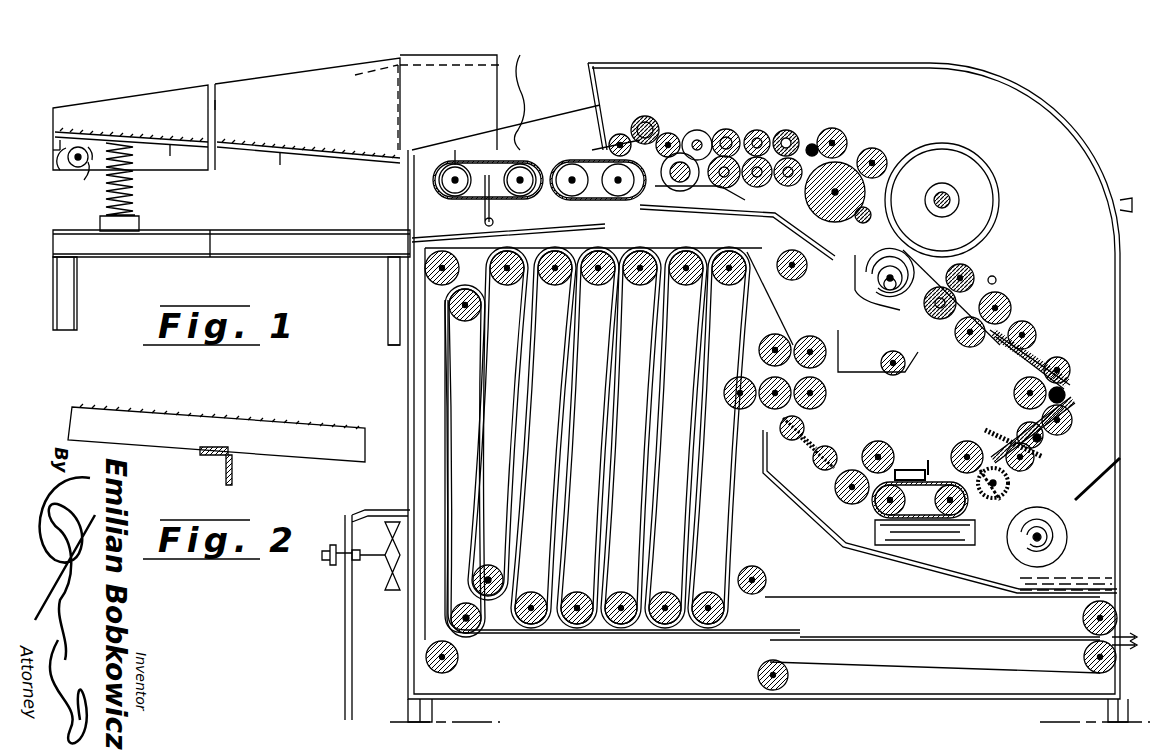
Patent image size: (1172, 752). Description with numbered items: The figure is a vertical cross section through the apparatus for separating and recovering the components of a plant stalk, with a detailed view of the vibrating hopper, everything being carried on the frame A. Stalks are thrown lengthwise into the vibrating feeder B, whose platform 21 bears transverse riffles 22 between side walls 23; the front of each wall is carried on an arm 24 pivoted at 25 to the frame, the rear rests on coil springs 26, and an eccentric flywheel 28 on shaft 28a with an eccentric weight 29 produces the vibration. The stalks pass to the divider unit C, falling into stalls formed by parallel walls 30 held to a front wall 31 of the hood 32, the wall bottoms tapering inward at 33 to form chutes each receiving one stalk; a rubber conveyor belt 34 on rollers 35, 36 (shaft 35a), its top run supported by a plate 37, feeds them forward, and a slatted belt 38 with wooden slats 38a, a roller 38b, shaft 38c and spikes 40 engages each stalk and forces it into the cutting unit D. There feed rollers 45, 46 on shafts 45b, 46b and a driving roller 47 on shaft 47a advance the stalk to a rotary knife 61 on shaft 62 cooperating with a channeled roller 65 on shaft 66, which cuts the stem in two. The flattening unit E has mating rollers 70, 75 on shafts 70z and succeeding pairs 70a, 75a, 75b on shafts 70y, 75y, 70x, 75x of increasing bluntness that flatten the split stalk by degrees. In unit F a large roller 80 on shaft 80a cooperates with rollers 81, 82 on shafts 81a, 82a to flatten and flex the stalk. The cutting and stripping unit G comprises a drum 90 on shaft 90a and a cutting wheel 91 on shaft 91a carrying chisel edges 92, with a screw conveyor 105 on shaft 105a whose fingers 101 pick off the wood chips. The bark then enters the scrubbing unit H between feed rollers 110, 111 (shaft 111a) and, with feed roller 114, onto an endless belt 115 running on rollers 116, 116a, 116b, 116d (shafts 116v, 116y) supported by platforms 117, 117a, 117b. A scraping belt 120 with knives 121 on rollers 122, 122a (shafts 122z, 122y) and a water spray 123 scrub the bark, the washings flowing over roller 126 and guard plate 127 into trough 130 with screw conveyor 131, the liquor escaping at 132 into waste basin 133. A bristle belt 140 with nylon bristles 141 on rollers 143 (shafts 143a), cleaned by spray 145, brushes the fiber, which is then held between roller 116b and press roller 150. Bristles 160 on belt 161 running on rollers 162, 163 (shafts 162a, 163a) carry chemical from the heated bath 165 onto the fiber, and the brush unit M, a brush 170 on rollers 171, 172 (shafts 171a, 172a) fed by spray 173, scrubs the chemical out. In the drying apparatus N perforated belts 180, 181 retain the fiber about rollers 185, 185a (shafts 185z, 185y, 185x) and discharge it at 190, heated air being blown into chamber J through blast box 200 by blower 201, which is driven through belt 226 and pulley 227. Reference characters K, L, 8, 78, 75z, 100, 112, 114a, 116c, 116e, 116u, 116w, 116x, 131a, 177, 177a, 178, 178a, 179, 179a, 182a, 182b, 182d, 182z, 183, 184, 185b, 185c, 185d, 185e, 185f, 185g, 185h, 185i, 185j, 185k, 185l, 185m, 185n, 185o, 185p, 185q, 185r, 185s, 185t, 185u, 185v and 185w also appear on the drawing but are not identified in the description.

In FIG. 1, the feed table frame A is at (386, 338).
In FIG. 1, the feed conveyor B is at (292, 75).
In FIG. 1, the hopper C is at (518, 91).
In FIG. 1, the feeding mechanism D is at (660, 100).
In FIG. 1, the mixing unit E is at (778, 56).
In FIG. 1, the crushing unit F is at (850, 110).
In FIG. 1, the drum G is at (965, 180).
In FIG. 1, the roller unit H is at (1092, 303).
In FIG. 1, the pressing unit J is at (1105, 440).
In FIG. 1, the winding wheel K is at (1090, 525).
In FIG. 1, the trough unit L is at (852, 592).
In FIG. 1, the chamber M is at (940, 511).
In FIG. 1, the conveyor unit N is at (672, 600).
In FIG. 1, the conveyor plank 21 is at (260, 160).
In FIG. 2, the conveyor plank 21 is at (290, 462).
In FIG. 1, the teeth 22 is at (205, 140).
In FIG. 2, the teeth 22 is at (245, 412).
In FIG. 1, the hopper wall 23 is at (352, 80).
In FIG. 1, the arm 24 is at (483, 213).
In FIG. 1, the bottom plate 25 is at (412, 236).
In FIG. 1, the spring 26 is at (134, 186).
In FIG. 1, the pulley 28 is at (76, 167).
In FIG. 1, the pulley arm 28a is at (86, 182).
In FIG. 1, the pivot 29 is at (68, 153).
In FIG. 1, the chute 30 is at (532, 140).
In FIG. 1, the housing wall 31 is at (585, 78).
In FIG. 1, the housing top 32 is at (613, 47).
In FIG. 1, the roller support 33 is at (455, 163).
In FIG. 1, the belt 34 is at (498, 153).
In FIG. 1, the roller 35 is at (440, 180).
In FIG. 1, the roller guide 35a is at (440, 170).
In FIG. 1, the roller shaft 36 is at (528, 196).
In FIG. 1, the roller 37 is at (520, 175).
In FIG. 1, the belt conveyor 38 is at (572, 196).
In FIG. 1, the belt guide 38a is at (565, 162).
In FIG. 1, the inclined belt 38b is at (672, 220).
In FIG. 1, the belt roller 38c is at (597, 235).
In FIG. 1, the belt guide 40 is at (570, 153).
In FIG. 1, the gear 45 is at (618, 133).
In FIG. 1, the gear 45b is at (630, 117).
In FIG. 1, the gear 46 is at (672, 133).
In FIG. 1, the gear 46b is at (677, 95).
In FIG. 1, the gear 47 is at (643, 116).
In FIG. 1, the gear 47a is at (650, 116).
In FIG. 1, the shaft 61 is at (722, 95).
In FIG. 1, the shaft 62 is at (720, 79).
In FIG. 1, the guide plate 65 is at (698, 223).
In FIG. 1, the guide plate 66 is at (700, 202).
In FIG. 1, the roller 70 is at (730, 128).
In FIG. 1, the roller 70a is at (792, 99).
In FIG. 1, the roller 70x is at (821, 132).
In FIG. 1, the roller 70y is at (784, 134).
In FIG. 1, the roller 70z is at (752, 132).
In FIG. 1, the roller 75 is at (705, 172).
In FIG. 1, the roller 75a is at (737, 180).
In FIG. 1, the roller 75b is at (768, 181).
In FIG. 1, the roller 75x is at (787, 199).
In FIG. 1, the roller 75y is at (750, 223).
In FIG. 1, the roller 75z is at (729, 219).
In FIG. 1, the roller 78 is at (672, 192).
In FIG. 1, the roller 8 is at (697, 130).
In FIG. 1, the crushing roller 80 is at (828, 200).
In FIG. 1, the roller shaft 80a is at (832, 227).
In FIG. 1, the roller 81 is at (843, 137).
In FIG. 1, the roller shaft 81a is at (880, 102).
In FIG. 1, the roller 82 is at (882, 150).
In FIG. 1, the roller shaft 82a is at (918, 109).
In FIG. 1, the drum 90 is at (1004, 198).
In FIG. 1, the drum shaft 90a is at (958, 196).
In FIG. 1, the guide 91 is at (830, 243).
In FIG. 1, the guide 91a is at (878, 210).
In FIG. 1, the roller 92 is at (859, 226).
In FIG. 1, the spiral roller 100 is at (905, 300).
In FIG. 1, the frame 101 is at (890, 343).
In FIG. 1, the roller 105 is at (835, 310).
In FIG. 1, the roller 105a is at (785, 328).
In FIG. 1, the roller 110 is at (968, 324).
In FIG. 1, the gear 111 is at (975, 270).
In FIG. 1, the gear shaft 111a is at (975, 285).
In FIG. 1, the gear 112 is at (1003, 288).
In FIG. 1, the shaft 114 is at (1000, 279).
In FIG. 1, the shaft 114a is at (1110, 282).
In FIG. 1, the frame 115 is at (888, 384).
In FIG. 1, the roller 116 is at (970, 350).
In FIG. 1, the roller 116a is at (999, 424).
In FIG. 1, the roller 116b is at (968, 446).
In FIG. 1, the roller 116c is at (885, 446).
In FIG. 1, the roller 116d is at (845, 383).
In FIG. 1, the roller 116e is at (880, 363).
In FIG. 1, the roller 116u is at (822, 419).
In FIG. 1, the roller 116v is at (894, 339).
In FIG. 1, the roller 116w is at (908, 467).
In FIG. 1, the roller 116x is at (959, 428).
In FIG. 1, the roller 116y is at (999, 392).
In FIG. 1, the belt 117 is at (958, 312).
In FIG. 1, the belt 117a is at (1000, 436).
In FIG. 1, the belt 117b is at (908, 463).
In FIG. 1, the roller 120 is at (1050, 344).
In FIG. 1, the roller 121 is at (1055, 349).
In FIG. 1, the roller 122 is at (1026, 325).
In FIG. 1, the roller 122a is at (1066, 376).
In FIG. 1, the roller 122y is at (1060, 362).
In FIG. 1, the bar 122z is at (1005, 340).
In FIG. 1, the roller 123 is at (1035, 340).
In FIG. 1, the roller 126 is at (1051, 393).
In FIG. 1, the roller 127 is at (1067, 405).
In FIG. 1, the winding wheel 130 is at (1068, 533).
In FIG. 1, the wheel 131 is at (1037, 522).
In FIG. 1, the wheel hub 131a is at (1080, 535).
In FIG. 1, the wheel rim 132 is at (1062, 558).
In FIG. 1, the liquid 133 is at (1115, 578).
In FIG. 1, the pivot 140 is at (1040, 442).
In FIG. 1, the bar 141 is at (1060, 445).
In FIG. 1, the gear 143 is at (1006, 484).
In FIG. 1, the gear 143a is at (1126, 405).
In FIG. 1, the gear 145 is at (1037, 462).
In FIG. 1, the belt 150 is at (990, 510).
In FIG. 1, the trough 160 is at (925, 545).
In FIG. 1, the trough wall 161 is at (905, 545).
In FIG. 1, the wall 162 is at (870, 520).
In FIG. 1, the wall 162a is at (862, 505).
In FIG. 1, the roller 163 is at (920, 500).
In FIG. 1, the roller 163a is at (936, 505).
In FIG. 1, the trough bottom 165 is at (975, 566).
In FIG. 1, the guide 170 is at (815, 455).
In FIG. 1, the roller 171 is at (835, 492).
In FIG. 1, the roller 171a is at (892, 431).
In FIG. 1, the belt 172 is at (810, 448).
In FIG. 1, the belt 172a is at (822, 449).
In FIG. 1, the roller 173 is at (791, 373).
In FIG. 1, the chamber wall 177 is at (440, 273).
In FIG. 1, the chamber wall 177a is at (440, 280).
In FIG. 1, the roller 178 is at (442, 664).
In FIG. 1, the roller shaft 178a is at (455, 668).
In FIG. 1, the roller 179 is at (790, 668).
In FIG. 1, the roller shaft 179a is at (788, 682).
In FIG. 1, the conveyor belt 180 is at (722, 328).
In FIG. 1, the conveyor belt 181 is at (985, 661).
In FIG. 1, the roller 182a is at (1082, 627).
In FIG. 1, the roller 182b is at (1084, 664).
In FIG. 1, the roller 182d is at (1082, 646).
In FIG. 1, the roller 182z is at (1082, 610).
In FIG. 1, the guide 183 is at (777, 579).
In FIG. 1, the guide 184 is at (780, 564).
In FIG. 1, the roller 185 is at (748, 551).
In FIG. 1, the roller 185a is at (676, 437).
In FIG. 1, the roller 185b is at (631, 437).
In FIG. 1, the roller 185c is at (588, 437).
In FIG. 1, the roller 185d is at (543, 437).
In FIG. 1, the roller 185e is at (498, 423).
In FIG. 1, the roller 185f is at (465, 461).
In FIG. 1, the roller 185g is at (499, 622).
In FIG. 1, the roller 185h is at (488, 571).
In FIG. 1, the roller 185i is at (531, 600).
In FIG. 1, the roller 185j is at (577, 600).
In FIG. 1, the roller 185k is at (621, 600).
In FIG. 1, the belt 185l is at (672, 640).
In FIG. 1, the roller 185m is at (718, 622).
In FIG. 1, the roller 185n is at (680, 620).
In FIG. 1, the roller 185o is at (621, 625).
In FIG. 1, the roller 185p is at (578, 625).
In FIG. 1, the roller 185q is at (535, 625).
In FIG. 1, the roller 185r is at (496, 604).
In FIG. 1, the roller 185s is at (466, 633).
In FIG. 1, the roller 185t is at (455, 268).
In FIG. 1, the roller 185u is at (464, 239).
In FIG. 1, the roller 185v is at (508, 239).
In FIG. 1, the roller 185w is at (550, 239).
In FIG. 1, the roller 185x is at (591, 239).
In FIG. 1, the roller 185y is at (632, 239).
In FIG. 1, the roller 185z is at (716, 240).
In FIG. 1, the outlet 190 is at (1122, 640).
In FIG. 1, the fan housing 200 is at (345, 650).
In FIG. 1, the fan 201 is at (345, 580).
In FIG. 1, the fan bearing 226 is at (322, 560).
In FIG. 1, the fan shaft 227 is at (336, 545).